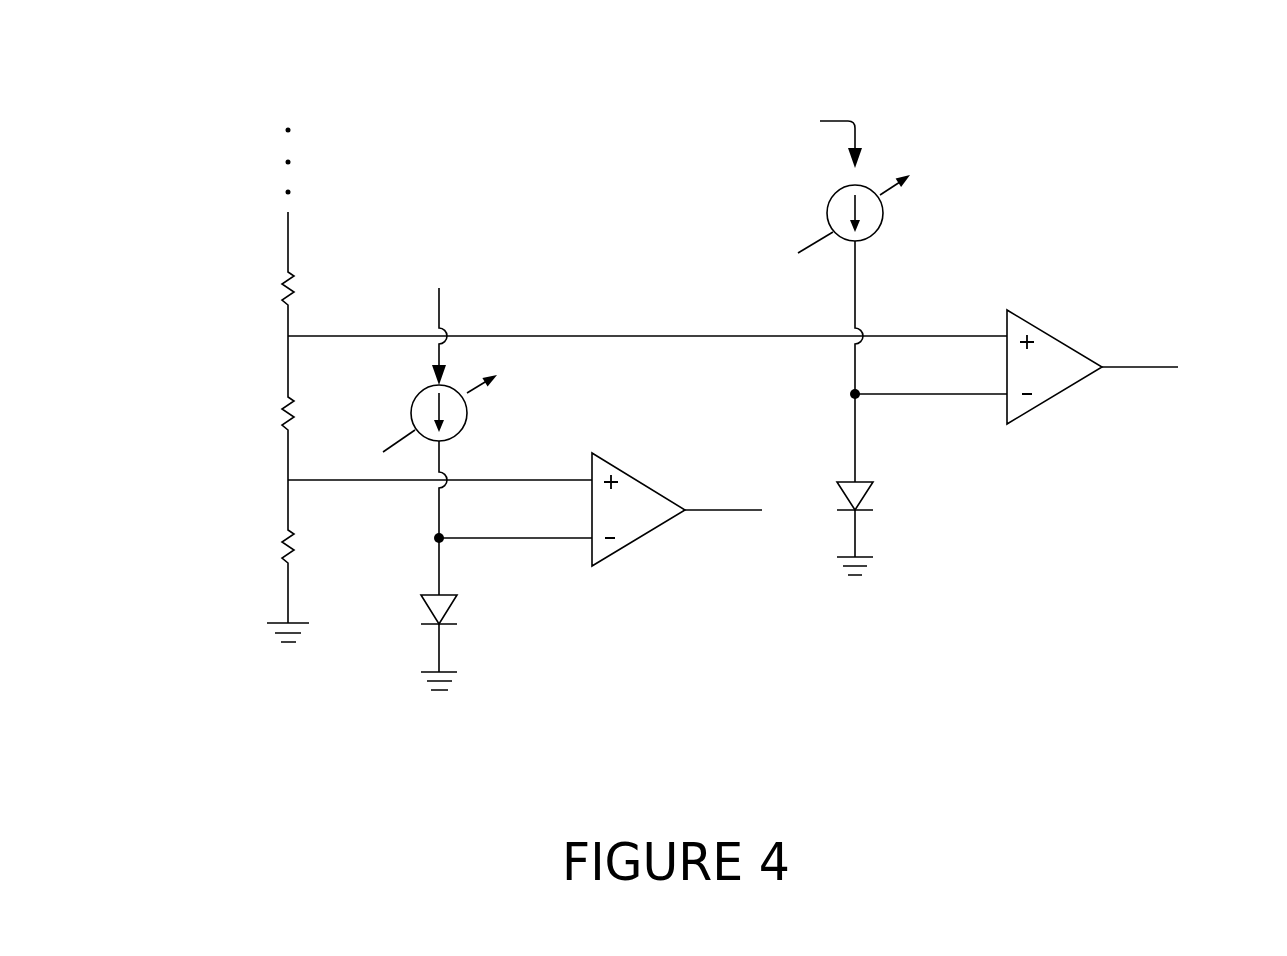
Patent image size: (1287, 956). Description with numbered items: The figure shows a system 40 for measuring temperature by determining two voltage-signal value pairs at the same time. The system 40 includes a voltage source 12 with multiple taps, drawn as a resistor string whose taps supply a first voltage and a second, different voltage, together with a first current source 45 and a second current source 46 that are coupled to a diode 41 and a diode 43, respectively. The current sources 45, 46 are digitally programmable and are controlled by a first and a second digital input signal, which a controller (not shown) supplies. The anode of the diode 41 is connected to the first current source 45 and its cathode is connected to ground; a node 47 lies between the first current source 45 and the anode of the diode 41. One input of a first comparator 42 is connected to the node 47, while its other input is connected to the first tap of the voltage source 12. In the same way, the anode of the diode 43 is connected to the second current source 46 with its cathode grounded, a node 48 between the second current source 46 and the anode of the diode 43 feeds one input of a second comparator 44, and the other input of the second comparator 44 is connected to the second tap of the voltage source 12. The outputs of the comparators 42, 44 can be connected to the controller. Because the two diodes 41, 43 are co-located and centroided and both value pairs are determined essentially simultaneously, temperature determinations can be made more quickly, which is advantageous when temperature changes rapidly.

The system 40 is at (102, 52).
The voltage source 12 is at (272, 460).
The first current source 45 is at (480, 431).
The second current source 46 is at (905, 241).
The node 47 is at (460, 551).
The node 48 is at (877, 406).
The diode 41 is at (462, 609).
The diode 43 is at (878, 494).
The first comparator 42 is at (667, 533).
The second comparator 44 is at (1073, 410).